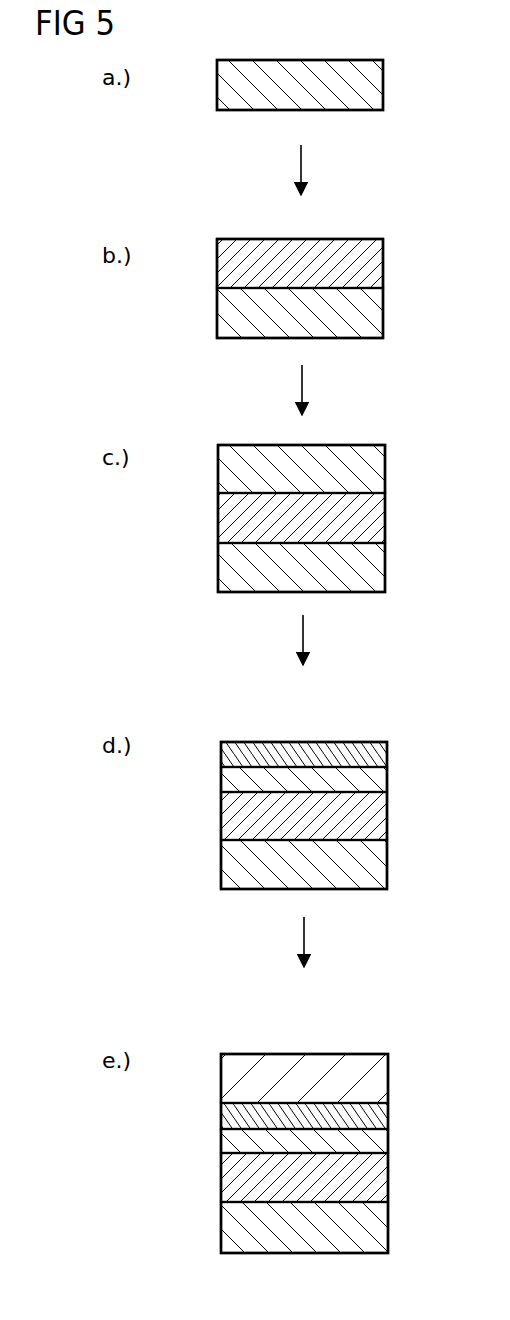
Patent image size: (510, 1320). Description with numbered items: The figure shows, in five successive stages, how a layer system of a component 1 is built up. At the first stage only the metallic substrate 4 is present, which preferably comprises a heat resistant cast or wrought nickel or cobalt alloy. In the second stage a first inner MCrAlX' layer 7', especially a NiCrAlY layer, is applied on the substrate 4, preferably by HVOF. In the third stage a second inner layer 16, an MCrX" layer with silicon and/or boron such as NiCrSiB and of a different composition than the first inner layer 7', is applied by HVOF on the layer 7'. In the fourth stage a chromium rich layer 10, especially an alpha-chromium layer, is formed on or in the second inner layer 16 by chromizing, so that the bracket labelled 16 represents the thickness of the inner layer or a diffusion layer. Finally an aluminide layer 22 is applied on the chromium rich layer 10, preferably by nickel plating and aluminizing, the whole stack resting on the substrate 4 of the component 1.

The component 1 is at (188, 89).
The metallic substrate 4 is at (373, 90).
The first inner MCrAlX' layer 7' is at (327, 720).
The second inner layer 16 is at (375, 465).
The chromium rich layer 10 is at (385, 752).
The aluminide layer 22 is at (380, 1082).